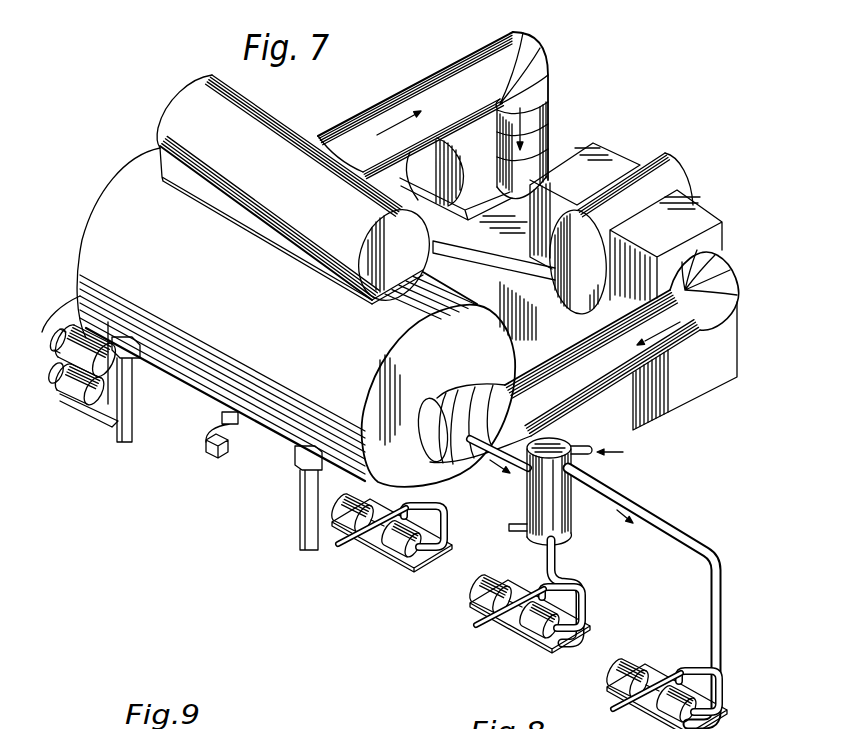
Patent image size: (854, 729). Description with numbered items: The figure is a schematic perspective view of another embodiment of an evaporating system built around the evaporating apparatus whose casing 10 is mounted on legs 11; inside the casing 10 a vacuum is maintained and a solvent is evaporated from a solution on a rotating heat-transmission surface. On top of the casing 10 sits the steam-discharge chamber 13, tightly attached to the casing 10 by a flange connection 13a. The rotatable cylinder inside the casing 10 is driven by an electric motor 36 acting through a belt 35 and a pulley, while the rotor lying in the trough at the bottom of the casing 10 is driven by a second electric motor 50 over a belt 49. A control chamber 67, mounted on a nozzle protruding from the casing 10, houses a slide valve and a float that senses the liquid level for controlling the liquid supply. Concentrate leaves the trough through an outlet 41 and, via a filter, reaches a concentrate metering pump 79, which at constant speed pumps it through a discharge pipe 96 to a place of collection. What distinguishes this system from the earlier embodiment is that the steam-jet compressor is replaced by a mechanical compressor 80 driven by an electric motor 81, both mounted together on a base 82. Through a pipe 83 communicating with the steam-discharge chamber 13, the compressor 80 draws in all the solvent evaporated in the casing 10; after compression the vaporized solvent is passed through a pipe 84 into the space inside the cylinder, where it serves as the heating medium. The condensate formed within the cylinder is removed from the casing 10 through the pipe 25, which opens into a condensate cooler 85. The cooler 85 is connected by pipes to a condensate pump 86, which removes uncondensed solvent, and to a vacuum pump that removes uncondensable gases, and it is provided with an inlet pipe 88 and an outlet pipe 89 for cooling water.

The casing 10 is at (97, 233).
The legs 11 is at (312, 523).
The steam-discharge chamber 13 is at (186, 118).
The flange connection 13a is at (163, 176).
The pipe 25 is at (522, 477).
The belt 35 is at (72, 299).
The electric motor 36 is at (72, 349).
The outlet 41 is at (440, 517).
The belt 49 is at (54, 331).
The electric motor 50 is at (70, 384).
The control chamber 67 is at (234, 433).
The concentrate metering pump 79 is at (407, 551).
The mechanical compressor 80 is at (663, 184).
The electric motor 81 is at (477, 140).
The base 82 is at (727, 342).
The pipe 83 is at (427, 96).
The pipe 84 is at (653, 345).
The condensate cooler 85 is at (572, 517).
The condensate pump 86 is at (538, 625).
The cooling-water inlet pipe 88 is at (583, 449).
The cooling-water outlet pipe 89 is at (512, 532).
The discharge pipe 96 is at (352, 548).